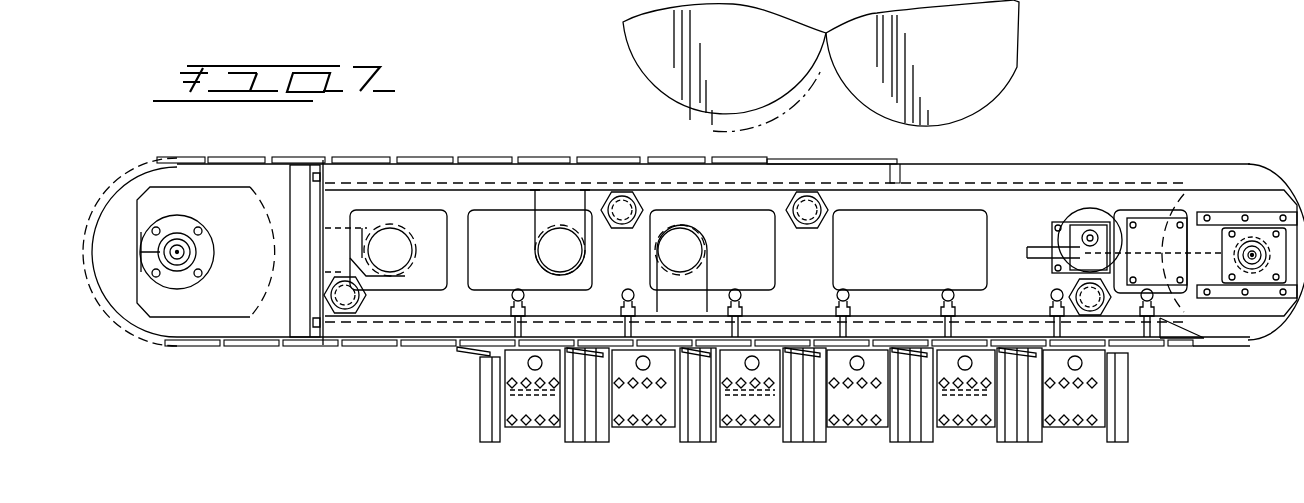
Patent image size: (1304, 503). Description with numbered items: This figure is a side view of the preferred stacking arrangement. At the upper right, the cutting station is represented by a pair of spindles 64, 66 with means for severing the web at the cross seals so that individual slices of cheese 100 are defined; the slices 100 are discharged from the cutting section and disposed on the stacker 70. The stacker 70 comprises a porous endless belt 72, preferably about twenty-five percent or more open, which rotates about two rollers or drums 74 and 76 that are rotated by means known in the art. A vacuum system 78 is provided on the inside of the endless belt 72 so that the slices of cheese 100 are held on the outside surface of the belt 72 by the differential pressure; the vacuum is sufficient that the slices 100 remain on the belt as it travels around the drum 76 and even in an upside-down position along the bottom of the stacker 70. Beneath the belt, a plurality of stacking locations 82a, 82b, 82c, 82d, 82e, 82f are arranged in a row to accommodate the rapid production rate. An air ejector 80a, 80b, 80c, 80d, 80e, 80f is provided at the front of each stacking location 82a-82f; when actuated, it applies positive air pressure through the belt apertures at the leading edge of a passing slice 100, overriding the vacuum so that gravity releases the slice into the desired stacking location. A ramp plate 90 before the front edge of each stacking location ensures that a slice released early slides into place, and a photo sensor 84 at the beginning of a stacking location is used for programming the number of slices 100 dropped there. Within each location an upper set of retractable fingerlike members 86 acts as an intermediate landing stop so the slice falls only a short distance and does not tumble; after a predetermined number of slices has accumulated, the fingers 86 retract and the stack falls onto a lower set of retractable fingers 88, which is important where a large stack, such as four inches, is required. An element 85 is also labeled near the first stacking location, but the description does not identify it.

The spindle 64 is at (983, 78).
The spindle 66 is at (663, 78).
The stacker 70 is at (1018, 157).
The endless belt 72 is at (1164, 163).
The drum 74 is at (1248, 345).
The drum 76 is at (183, 325).
The vacuum system 78 is at (407, 173).
The air ejector 80a is at (513, 334).
The air ejector 80b is at (647, 312).
The air ejector 80c is at (730, 332).
The air ejector 80d is at (835, 332).
The air ejector 80e is at (973, 287).
The air ejector 80f is at (1052, 312).
The stacking location 82a is at (470, 395).
The stacking location 82b is at (622, 338).
The stacking location 82c is at (749, 338).
The stacking location 82d is at (852, 338).
The stacking location 82e is at (730, 340).
The stacking location 82f is at (1078, 430).
The photo sensor 84 is at (445, 365).
The lower fastener row 85 is at (510, 418).
The upper set of retractable fingerlike members 86 is at (956, 367).
The lower set of retractable fingerlike members 88 is at (972, 423).
The ramp plate 90 is at (513, 380).
The slices of cheese 100 is at (475, 158).